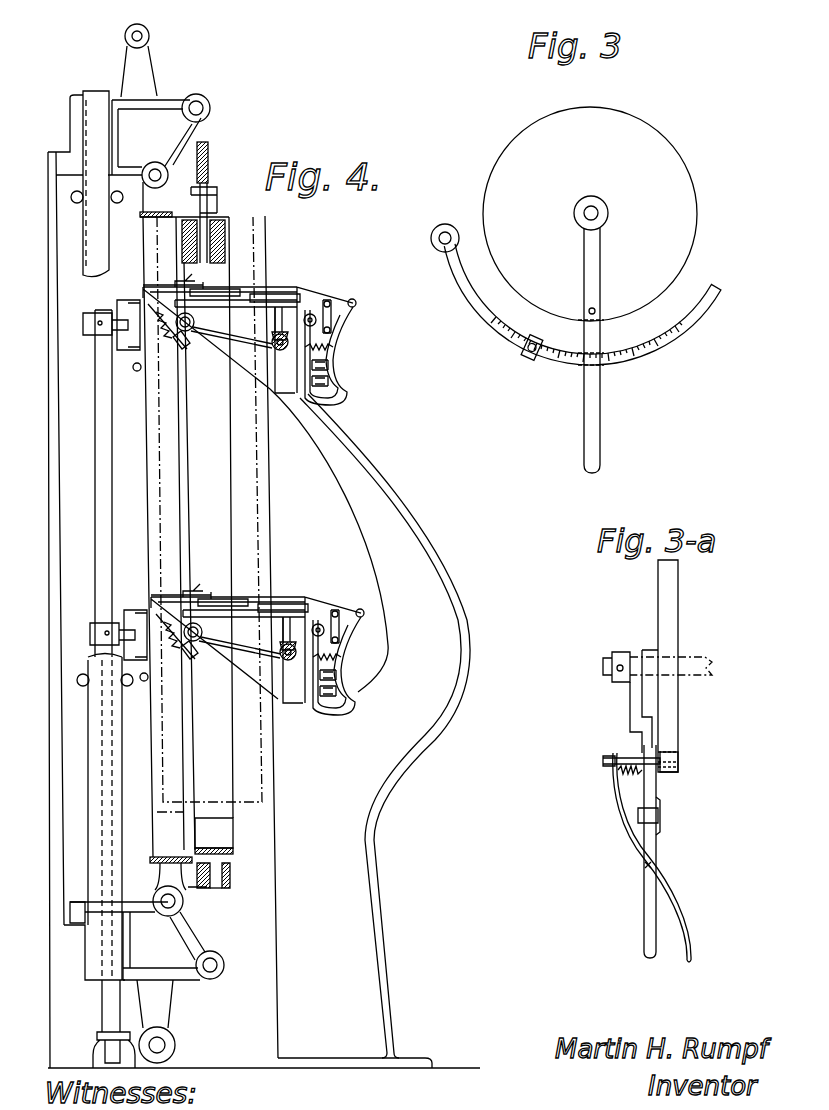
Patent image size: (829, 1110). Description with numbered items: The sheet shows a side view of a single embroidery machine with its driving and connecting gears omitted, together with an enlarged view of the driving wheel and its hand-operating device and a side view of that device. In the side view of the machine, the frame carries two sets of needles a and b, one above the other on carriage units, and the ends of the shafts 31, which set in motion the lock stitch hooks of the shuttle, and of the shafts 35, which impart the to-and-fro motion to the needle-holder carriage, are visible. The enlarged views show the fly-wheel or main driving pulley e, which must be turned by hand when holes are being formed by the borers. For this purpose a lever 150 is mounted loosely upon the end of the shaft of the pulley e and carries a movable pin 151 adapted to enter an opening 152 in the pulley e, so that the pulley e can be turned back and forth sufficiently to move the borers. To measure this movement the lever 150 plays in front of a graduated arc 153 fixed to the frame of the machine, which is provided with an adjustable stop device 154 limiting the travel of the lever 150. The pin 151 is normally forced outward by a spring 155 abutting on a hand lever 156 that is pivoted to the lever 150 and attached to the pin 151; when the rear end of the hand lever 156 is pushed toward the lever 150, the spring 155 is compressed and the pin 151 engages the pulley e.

In FIG. 4, the set of needles a is at (249, 333).
In FIG. 4, the set of needles b is at (257, 643).
In FIG. 4, the shafts 31 is at (137, 371).
In FIG. 4, the shafts 35 is at (282, 509).
In FIG. 3, the fly-wheel e is at (662, 146).
In FIG. 3A, the fly-wheel e is at (672, 580).
In FIG. 3, the lever 150 is at (600, 397).
In FIG. 3A, the lever 150 is at (650, 919).
In FIG. 3, the movable pin 151 is at (613, 305).
In FIG. 3A, the movable pin 151 is at (630, 758).
In FIG. 3A, the opening 152 is at (676, 758).
In FIG. 3, the graduated arc 153 is at (694, 318).
In FIG. 3, the adjustable stop device 154 is at (530, 359).
In FIG. 3A, the adjustable stop device 154 is at (660, 818).
In FIG. 3A, the spring 155 is at (628, 774).
In FIG. 3A, the hand lever 156 is at (683, 922).